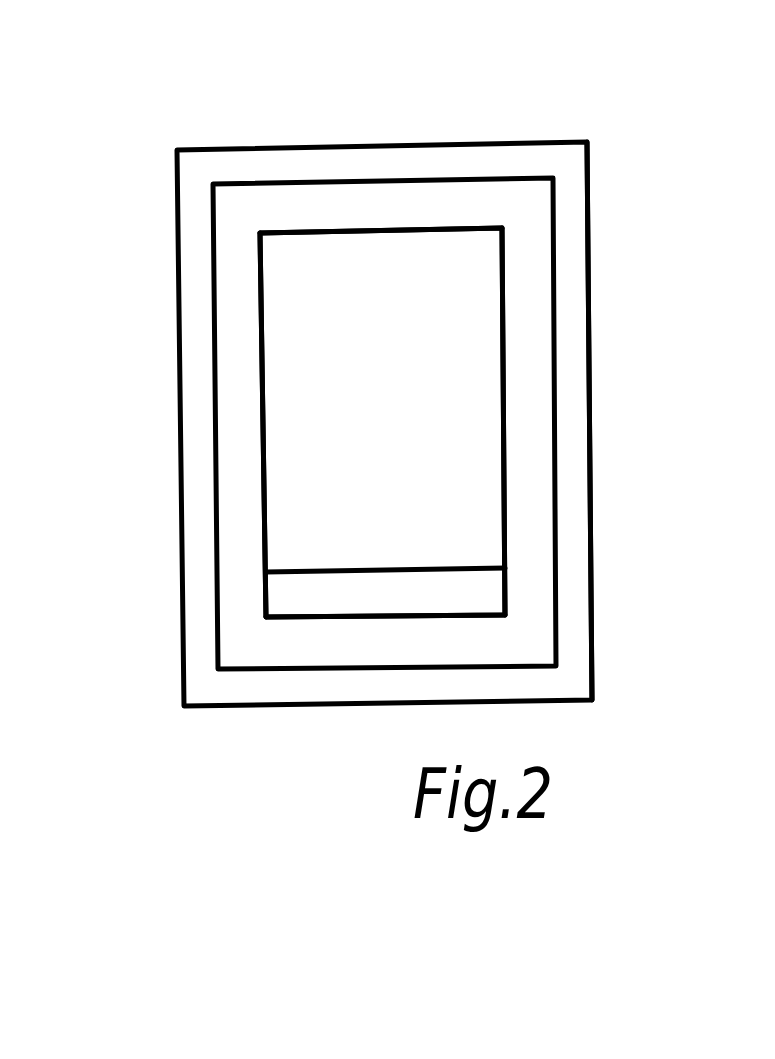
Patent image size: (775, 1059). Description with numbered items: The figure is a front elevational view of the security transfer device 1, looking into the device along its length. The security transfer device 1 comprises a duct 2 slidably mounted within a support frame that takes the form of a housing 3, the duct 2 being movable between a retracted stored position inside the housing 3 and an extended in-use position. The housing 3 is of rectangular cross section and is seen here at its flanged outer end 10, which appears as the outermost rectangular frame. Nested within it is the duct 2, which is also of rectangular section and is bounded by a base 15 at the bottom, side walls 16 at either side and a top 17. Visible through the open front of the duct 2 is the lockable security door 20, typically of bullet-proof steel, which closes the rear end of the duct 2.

The security transfer device 1 is at (623, 120).
The duct 2 is at (554, 284).
The housing 3 is at (589, 363).
The flanged outer end 10 is at (578, 525).
The base 15 is at (347, 600).
The side walls 16 is at (265, 403).
The top 17 is at (375, 232).
The lockable security door 20 is at (340, 482).